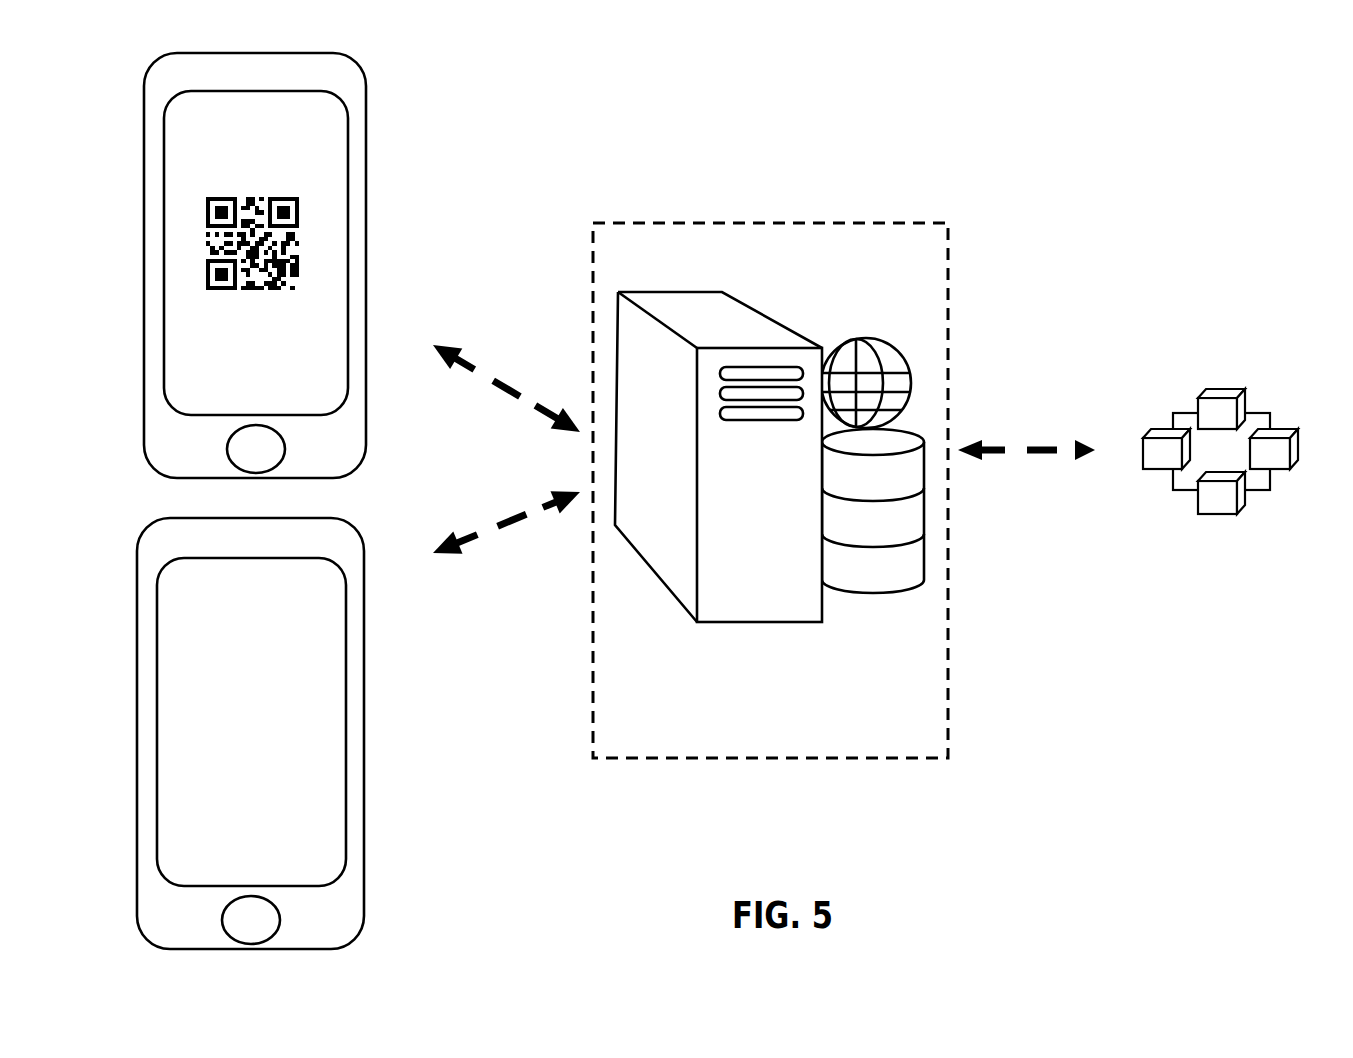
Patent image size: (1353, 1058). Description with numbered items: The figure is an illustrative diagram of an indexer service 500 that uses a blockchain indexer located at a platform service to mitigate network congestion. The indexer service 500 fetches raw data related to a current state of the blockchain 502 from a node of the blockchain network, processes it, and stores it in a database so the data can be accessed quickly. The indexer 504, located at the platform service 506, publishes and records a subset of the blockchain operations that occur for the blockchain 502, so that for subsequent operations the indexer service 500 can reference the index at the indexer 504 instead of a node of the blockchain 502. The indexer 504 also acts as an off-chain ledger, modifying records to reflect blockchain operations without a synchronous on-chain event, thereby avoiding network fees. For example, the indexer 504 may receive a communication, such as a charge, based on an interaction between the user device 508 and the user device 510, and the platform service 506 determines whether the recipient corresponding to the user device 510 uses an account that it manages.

The indexer service 500 is at (818, 176).
The blockchain 502 is at (1237, 345).
The indexer 504 is at (745, 640).
The platform service 506 is at (920, 783).
The user device 508 is at (377, 288).
The user device 510 is at (378, 752).